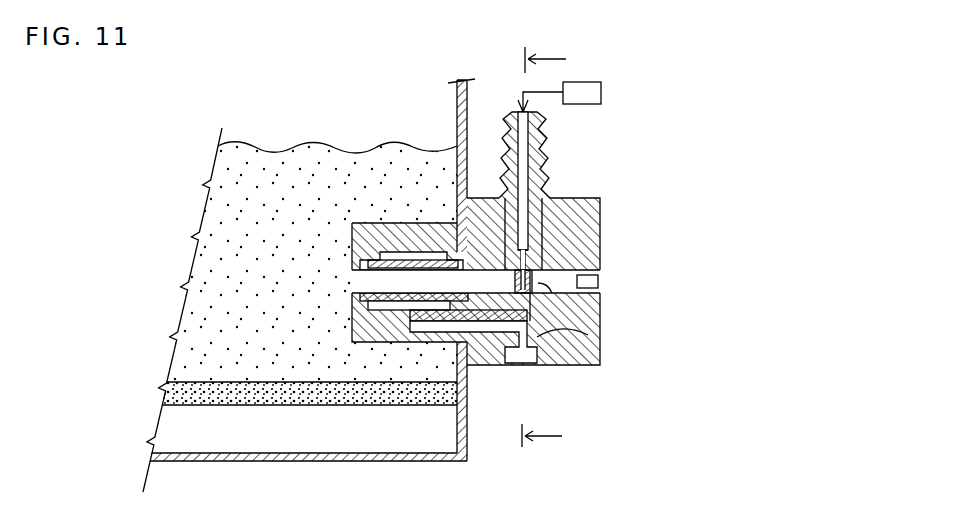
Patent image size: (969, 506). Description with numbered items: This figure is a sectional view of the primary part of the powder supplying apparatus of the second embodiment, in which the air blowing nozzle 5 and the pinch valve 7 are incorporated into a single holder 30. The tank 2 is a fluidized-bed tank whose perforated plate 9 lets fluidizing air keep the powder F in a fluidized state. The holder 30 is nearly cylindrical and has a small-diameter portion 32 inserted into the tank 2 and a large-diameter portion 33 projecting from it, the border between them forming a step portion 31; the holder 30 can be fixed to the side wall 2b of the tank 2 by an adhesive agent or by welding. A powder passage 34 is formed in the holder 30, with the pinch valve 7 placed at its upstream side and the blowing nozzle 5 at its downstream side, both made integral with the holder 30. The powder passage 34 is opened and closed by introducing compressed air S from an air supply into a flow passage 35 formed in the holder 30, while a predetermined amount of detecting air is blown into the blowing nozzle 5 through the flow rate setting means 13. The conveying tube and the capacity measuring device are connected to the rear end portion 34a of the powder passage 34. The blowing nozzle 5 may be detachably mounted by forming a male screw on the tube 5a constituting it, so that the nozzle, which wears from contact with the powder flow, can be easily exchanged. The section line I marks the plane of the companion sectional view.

The powder F is at (300, 310).
The perforated plate 9 is at (233, 405).
The tank 2 is at (452, 461).
The side wall 2b is at (468, 127).
The step portion 31 is at (470, 362).
The small-diameter portion 32 is at (393, 342).
The pinch valve 7 is at (448, 248).
The holder 30 is at (603, 240).
The tube 5a is at (541, 197).
The flow rate setting means 13 is at (602, 94).
The blowing nozzle 5 is at (578, 316).
The powder passage 34 is at (556, 266).
The rear end portion 34a is at (603, 280).
The large-diameter portion 33 is at (580, 366).
The flow passage 35 is at (598, 350).
The compressed air S is at (528, 380).
The section line I is at (550, 248).